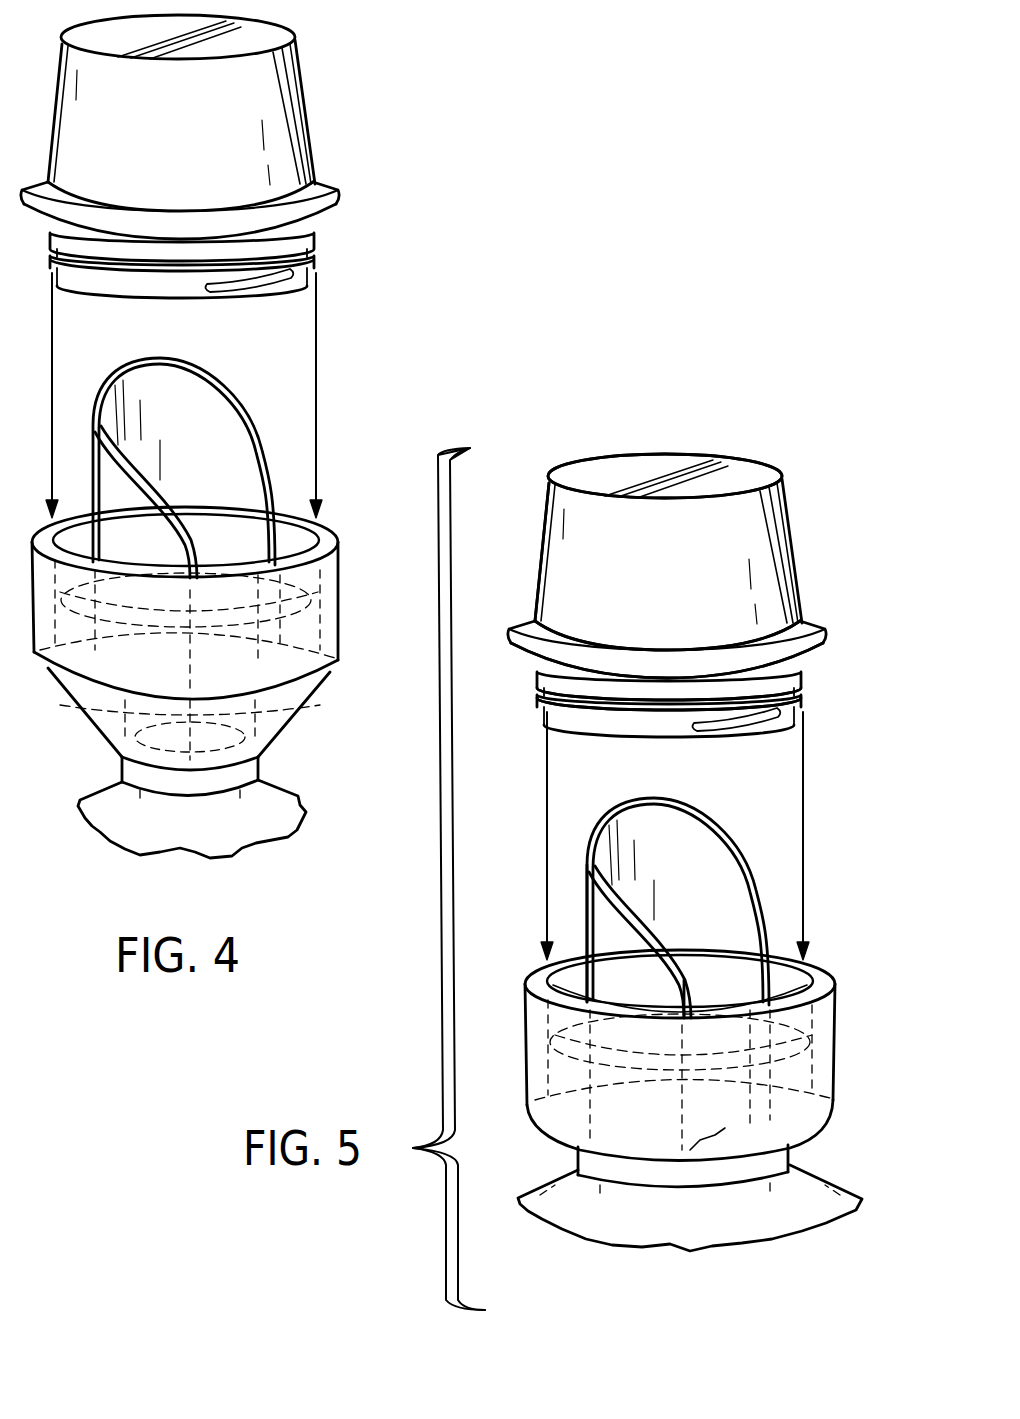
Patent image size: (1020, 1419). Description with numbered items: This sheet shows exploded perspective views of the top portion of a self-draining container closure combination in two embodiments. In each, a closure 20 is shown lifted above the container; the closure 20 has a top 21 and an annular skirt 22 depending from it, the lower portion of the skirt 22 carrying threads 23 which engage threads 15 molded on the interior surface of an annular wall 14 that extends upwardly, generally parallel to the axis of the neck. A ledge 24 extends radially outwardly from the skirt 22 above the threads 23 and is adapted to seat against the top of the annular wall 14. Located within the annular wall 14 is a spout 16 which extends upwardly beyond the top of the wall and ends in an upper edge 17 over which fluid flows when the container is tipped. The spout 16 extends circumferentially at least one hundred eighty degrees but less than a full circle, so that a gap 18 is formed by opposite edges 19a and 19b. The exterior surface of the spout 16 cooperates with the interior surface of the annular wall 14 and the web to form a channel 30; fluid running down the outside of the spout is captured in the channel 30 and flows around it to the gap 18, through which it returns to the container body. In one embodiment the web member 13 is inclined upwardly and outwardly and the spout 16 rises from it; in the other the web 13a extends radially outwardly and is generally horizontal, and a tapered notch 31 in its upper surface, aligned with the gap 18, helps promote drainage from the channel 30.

In FIG. 4, the closure 20 is at (300, 41).
In FIG. 5, the closure 20 is at (724, 452).
In FIG. 5, the top 21 is at (617, 456).
In FIG. 5, the annular skirt 22 is at (541, 570).
In FIG. 5, the threads 23 is at (545, 683).
In FIG. 5, the ledge 24 is at (520, 645).
In FIG. 4, the threads 15 is at (288, 555).
In FIG. 5, the spout 16 is at (600, 920).
In FIG. 5, the upper edge 17 is at (617, 805).
In FIG. 5, the gap 18 is at (715, 995).
In FIG. 5, the edge 19a is at (527, 983).
In FIG. 5, the edge 19b is at (835, 975).
In FIG. 4, the channel 30 is at (300, 548).
In FIG. 4, the annular wall 14 is at (340, 600).
In FIG. 4, the web member 13 is at (285, 725).
In FIG. 5, the web 13a is at (553, 1137).
In FIG. 5, the tapered notch 31 is at (690, 1150).